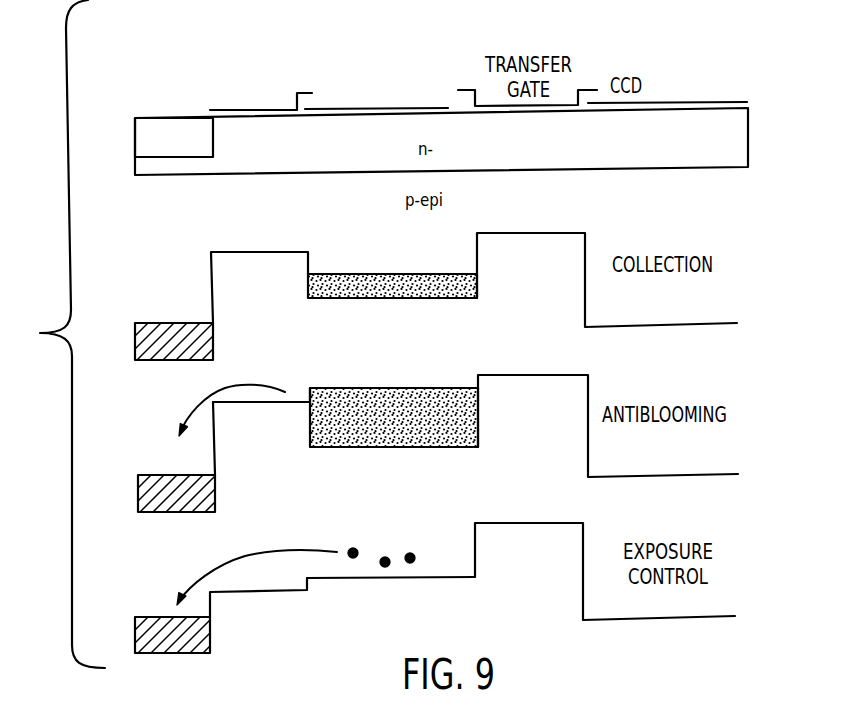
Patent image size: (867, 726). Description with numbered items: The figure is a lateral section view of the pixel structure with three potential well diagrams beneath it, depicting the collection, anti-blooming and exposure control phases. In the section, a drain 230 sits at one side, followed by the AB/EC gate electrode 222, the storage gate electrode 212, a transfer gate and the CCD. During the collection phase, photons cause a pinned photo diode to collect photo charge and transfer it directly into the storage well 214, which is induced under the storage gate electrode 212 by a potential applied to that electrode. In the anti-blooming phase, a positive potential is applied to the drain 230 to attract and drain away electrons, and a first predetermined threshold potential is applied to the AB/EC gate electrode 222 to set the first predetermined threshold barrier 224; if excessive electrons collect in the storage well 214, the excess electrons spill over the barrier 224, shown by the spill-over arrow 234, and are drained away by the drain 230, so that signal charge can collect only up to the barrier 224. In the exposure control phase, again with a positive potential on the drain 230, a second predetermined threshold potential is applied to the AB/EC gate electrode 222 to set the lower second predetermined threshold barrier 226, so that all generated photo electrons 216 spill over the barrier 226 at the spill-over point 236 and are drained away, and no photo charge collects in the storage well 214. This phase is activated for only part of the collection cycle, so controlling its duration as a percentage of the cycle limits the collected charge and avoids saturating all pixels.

The storage gate electrode 212 is at (357, 107).
The storage well 214 is at (375, 273).
The generated photo electrons 216 is at (353, 548).
The AB/EC gate electrode 222 is at (223, 109).
The first predetermined threshold barrier 224 is at (292, 401).
The second predetermined threshold barrier 226 is at (272, 589).
The drain 230 is at (142, 117).
The excess electron spill-over 234 is at (195, 394).
The photo electron spill-over during exposure control 236 is at (205, 558).